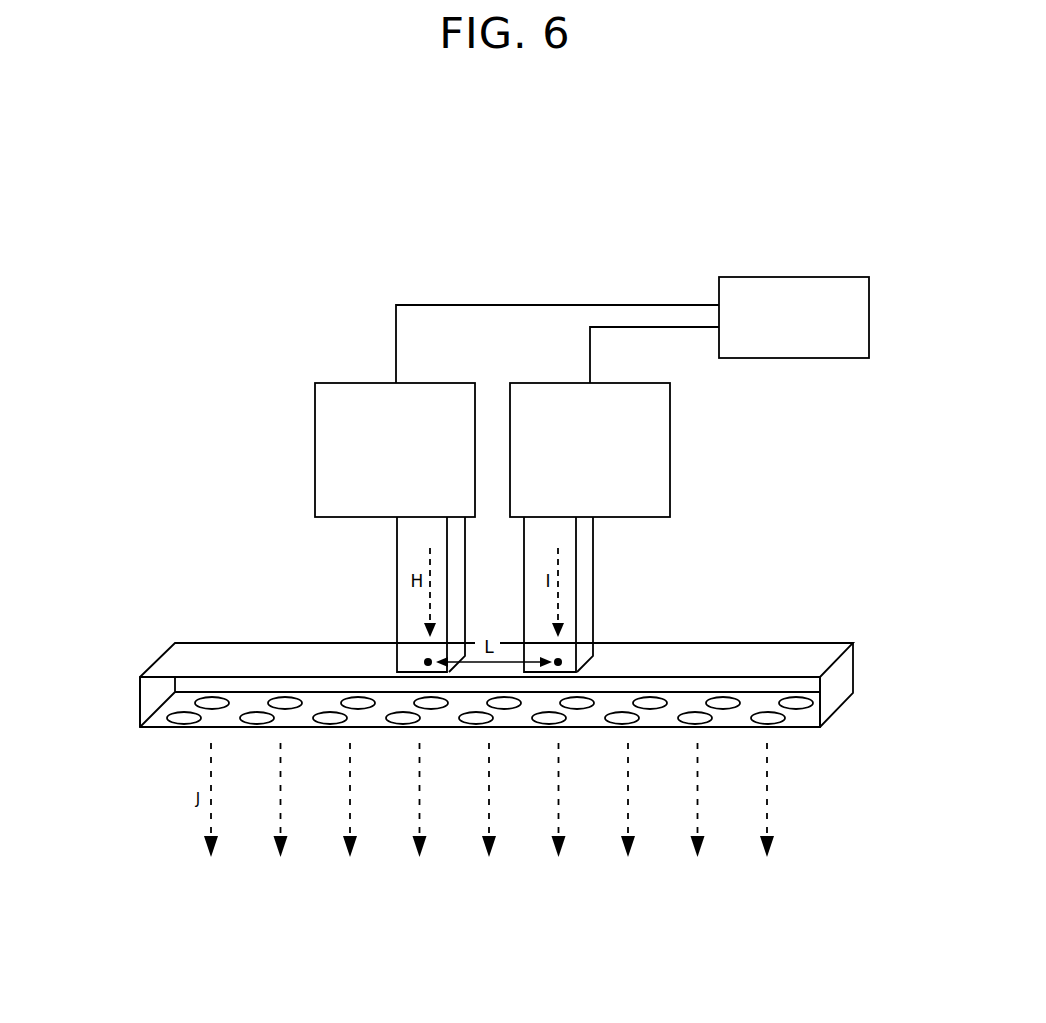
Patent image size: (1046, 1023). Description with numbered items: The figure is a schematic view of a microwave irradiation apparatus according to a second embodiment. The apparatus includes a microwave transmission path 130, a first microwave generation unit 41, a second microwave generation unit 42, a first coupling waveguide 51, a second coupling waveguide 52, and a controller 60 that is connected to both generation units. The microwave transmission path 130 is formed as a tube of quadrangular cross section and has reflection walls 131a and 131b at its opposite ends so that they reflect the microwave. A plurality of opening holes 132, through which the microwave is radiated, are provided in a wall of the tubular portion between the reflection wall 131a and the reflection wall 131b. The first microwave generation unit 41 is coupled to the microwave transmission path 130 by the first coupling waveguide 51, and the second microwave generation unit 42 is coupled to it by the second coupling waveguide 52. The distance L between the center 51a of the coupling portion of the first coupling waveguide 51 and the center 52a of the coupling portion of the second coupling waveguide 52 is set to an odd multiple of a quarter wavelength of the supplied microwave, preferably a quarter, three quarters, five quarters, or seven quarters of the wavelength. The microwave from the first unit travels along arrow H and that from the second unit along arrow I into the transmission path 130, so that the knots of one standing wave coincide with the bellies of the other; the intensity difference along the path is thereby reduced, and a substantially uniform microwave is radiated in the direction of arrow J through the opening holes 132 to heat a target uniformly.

The first microwave generation unit 41 is at (375, 383).
The second microwave generation unit 42 is at (610, 383).
The controller 60 is at (797, 277).
The first coupling waveguide 51 is at (397, 578).
The second coupling waveguide 52 is at (593, 578).
The center of the coupling portion 51a is at (424, 661).
The center of the coupling portion 52a is at (562, 661).
The microwave transmission path 130 is at (499, 679).
The reflection wall 131a is at (152, 690).
The reflection wall 131b is at (838, 695).
The opening holes 132 is at (775, 718).